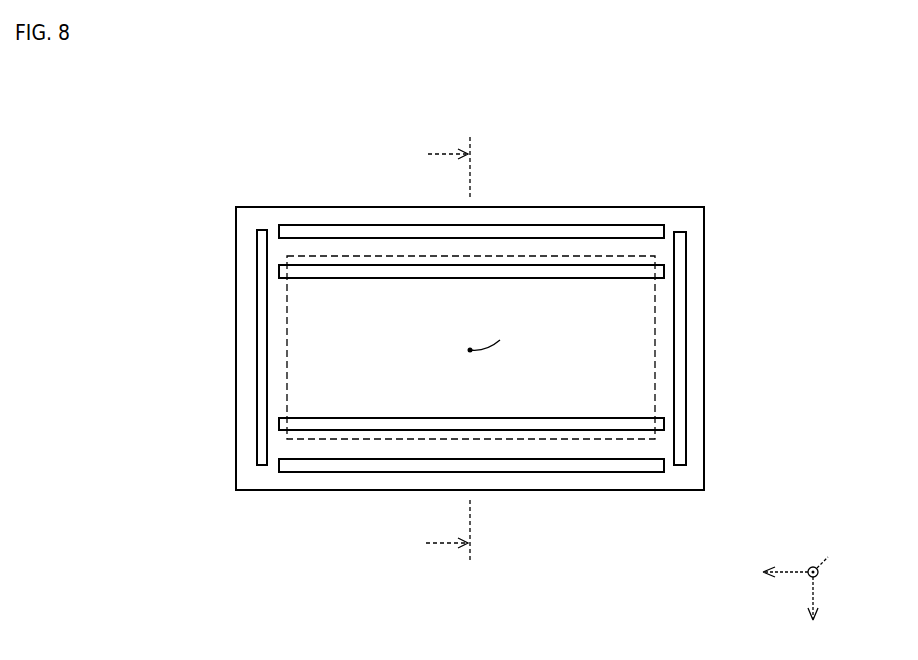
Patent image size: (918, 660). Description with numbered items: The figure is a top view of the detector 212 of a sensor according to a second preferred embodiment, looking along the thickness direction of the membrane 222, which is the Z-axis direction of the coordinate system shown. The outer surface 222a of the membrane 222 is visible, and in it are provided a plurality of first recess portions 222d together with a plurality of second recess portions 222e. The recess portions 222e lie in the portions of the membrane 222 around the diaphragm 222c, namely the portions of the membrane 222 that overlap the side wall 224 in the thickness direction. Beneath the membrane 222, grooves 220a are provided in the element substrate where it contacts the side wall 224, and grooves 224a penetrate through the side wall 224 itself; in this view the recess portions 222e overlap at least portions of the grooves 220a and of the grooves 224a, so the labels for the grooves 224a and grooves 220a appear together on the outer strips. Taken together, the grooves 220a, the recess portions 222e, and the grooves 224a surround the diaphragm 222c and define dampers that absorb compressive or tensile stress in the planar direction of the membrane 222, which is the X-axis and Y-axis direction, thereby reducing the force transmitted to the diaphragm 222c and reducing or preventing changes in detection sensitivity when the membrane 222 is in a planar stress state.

The detector 212 is at (178, 236).
The membrane 222 is at (700, 357).
The outer surface 222a is at (523, 347).
The diaphragm 222c is at (650, 317).
The recess portions 222d is at (325, 278).
The recess portions 222e is at (470, 346).
The side wall 224 is at (270, 491).
The grooves 224a is at (470, 349).
The grooves 220a is at (575, 234).